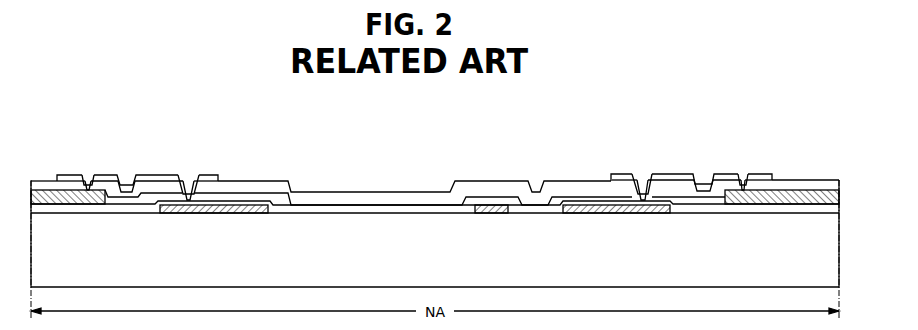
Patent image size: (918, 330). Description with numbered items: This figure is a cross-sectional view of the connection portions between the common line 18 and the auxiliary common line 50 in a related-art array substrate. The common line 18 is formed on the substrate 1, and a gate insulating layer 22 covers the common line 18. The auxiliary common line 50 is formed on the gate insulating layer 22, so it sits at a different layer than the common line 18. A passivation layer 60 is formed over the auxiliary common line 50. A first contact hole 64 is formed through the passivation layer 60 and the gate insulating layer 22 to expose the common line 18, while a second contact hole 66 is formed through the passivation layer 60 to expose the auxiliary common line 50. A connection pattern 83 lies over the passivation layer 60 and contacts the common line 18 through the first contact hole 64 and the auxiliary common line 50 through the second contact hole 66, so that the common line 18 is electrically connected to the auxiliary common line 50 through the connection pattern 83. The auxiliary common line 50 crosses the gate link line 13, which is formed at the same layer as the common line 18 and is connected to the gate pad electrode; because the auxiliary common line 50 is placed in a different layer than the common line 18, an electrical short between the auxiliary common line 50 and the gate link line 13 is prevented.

The substrate 1 is at (828, 276).
The gate link line 13 is at (491, 209).
The common line 18 is at (207, 214).
The gate insulating layer 22 is at (406, 207).
The auxiliary common line 50 is at (63, 204).
The passivation layer 60 is at (441, 197).
The first contact hole 64 is at (188, 175).
The second contact hole 66 is at (88, 175).
The connection pattern 83 is at (157, 175).